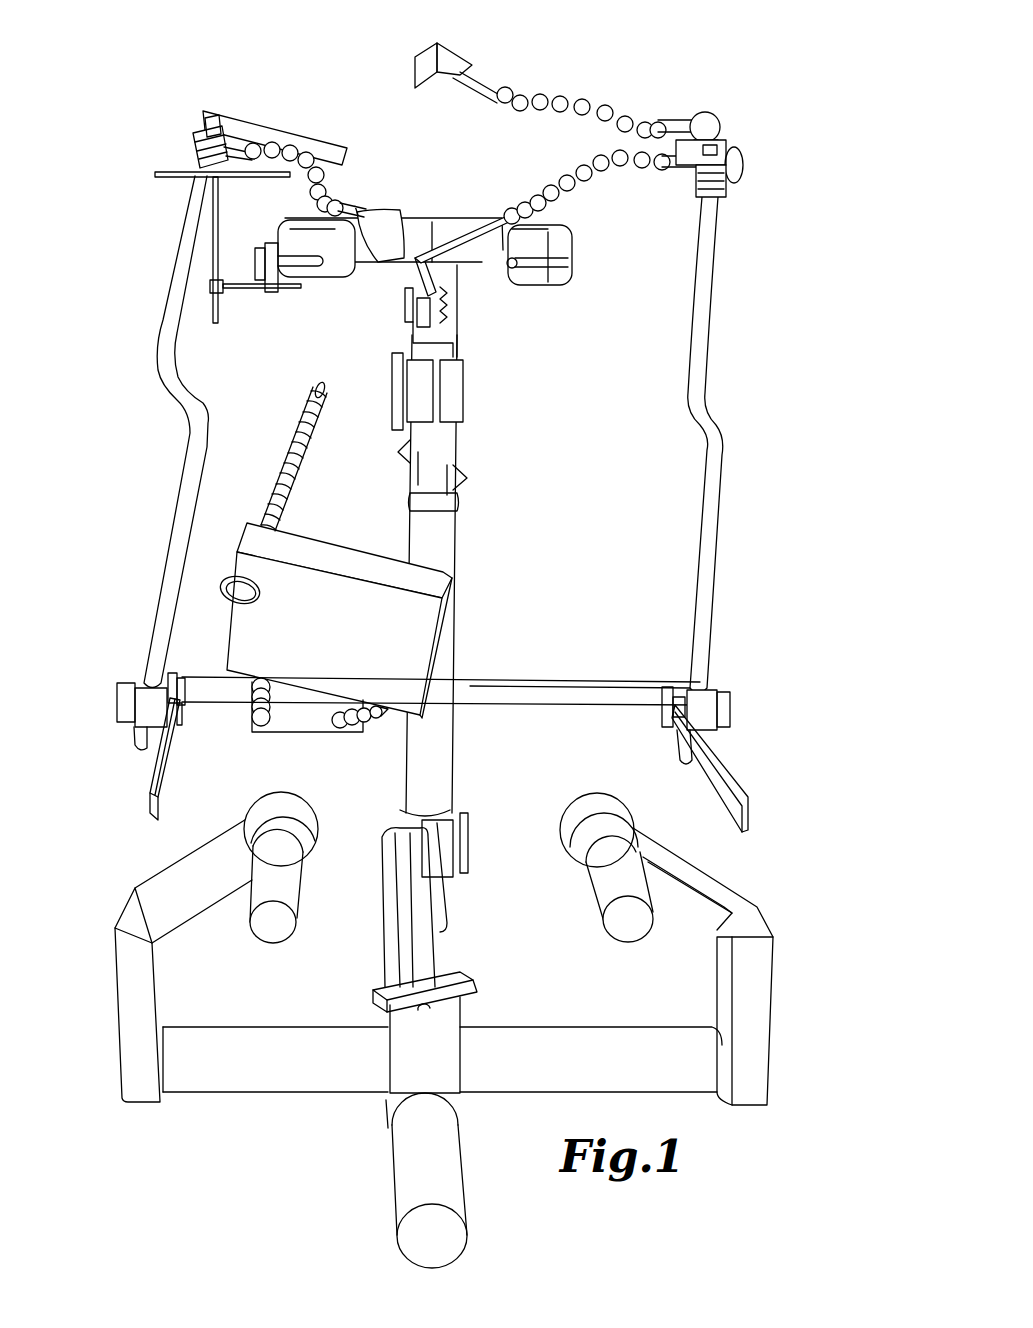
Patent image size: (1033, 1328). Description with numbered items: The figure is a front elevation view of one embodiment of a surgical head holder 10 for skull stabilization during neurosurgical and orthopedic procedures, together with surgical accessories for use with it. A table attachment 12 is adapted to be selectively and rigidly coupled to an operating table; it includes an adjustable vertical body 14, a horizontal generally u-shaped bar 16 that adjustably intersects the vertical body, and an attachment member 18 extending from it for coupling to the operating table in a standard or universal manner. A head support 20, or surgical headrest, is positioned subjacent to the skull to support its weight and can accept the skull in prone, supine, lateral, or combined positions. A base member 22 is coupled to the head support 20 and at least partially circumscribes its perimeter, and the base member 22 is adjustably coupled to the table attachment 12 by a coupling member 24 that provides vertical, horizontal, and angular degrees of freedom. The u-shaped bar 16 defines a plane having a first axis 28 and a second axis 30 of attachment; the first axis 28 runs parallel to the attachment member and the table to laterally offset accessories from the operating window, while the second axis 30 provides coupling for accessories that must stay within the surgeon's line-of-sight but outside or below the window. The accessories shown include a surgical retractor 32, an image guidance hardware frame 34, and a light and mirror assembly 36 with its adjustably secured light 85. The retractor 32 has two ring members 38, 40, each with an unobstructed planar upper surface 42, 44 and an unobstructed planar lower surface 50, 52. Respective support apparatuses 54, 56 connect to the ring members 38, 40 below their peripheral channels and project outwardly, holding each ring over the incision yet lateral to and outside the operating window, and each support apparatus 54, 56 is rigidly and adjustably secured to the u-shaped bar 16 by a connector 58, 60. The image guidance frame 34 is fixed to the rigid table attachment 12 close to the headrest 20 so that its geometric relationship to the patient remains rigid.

The surgical head holder 10 is at (116, 181).
The table attachment 12 is at (470, 1203).
The adjustable vertical body 14 is at (459, 531).
The horizontal generally u-shaped bar 16 is at (539, 682).
The attachment member 18 is at (436, 956).
The head support 20 is at (440, 220).
The base member 22 is at (531, 289).
The coupling member 24 is at (404, 301).
The first axis of attachment 28 is at (150, 793).
The second axis of attachment 30 is at (237, 705).
The surgical retractor 32 is at (187, 121).
The image guidance hardware frame 34 is at (469, 389).
The light and mirror assembly 36 is at (322, 555).
The ring member 38 is at (729, 139).
The ring member 40 is at (236, 120).
The unobstructed planar upper surface 42 is at (706, 132).
The unobstructed planar upper surface 44 is at (297, 130).
The unobstructed planar lower surface 50 is at (689, 186).
The unobstructed planar lower surface 52 is at (336, 169).
The support apparatus 54 is at (709, 421).
The support apparatus 56 is at (178, 408).
The connector 58 is at (716, 690).
The connector 60 is at (137, 700).
The light 85 is at (290, 425).